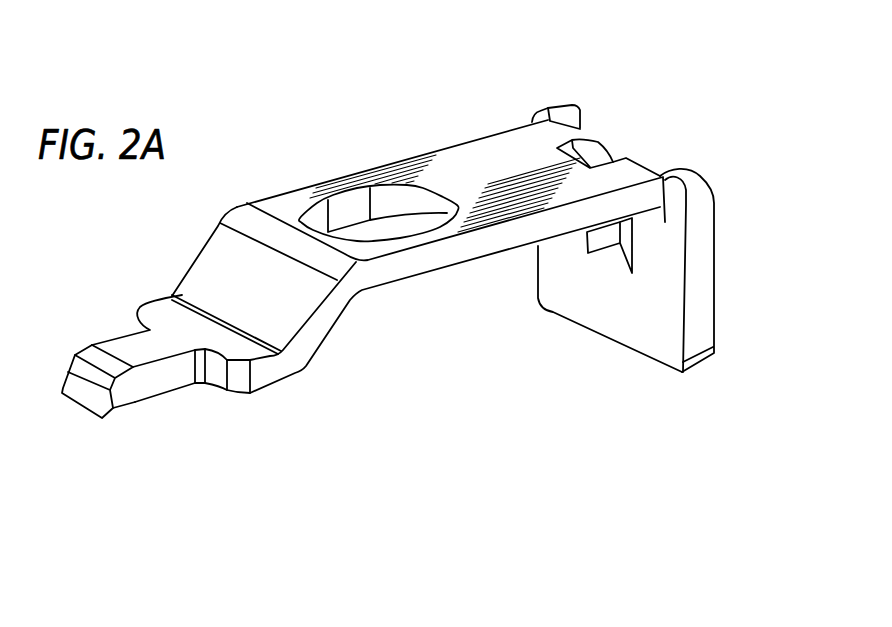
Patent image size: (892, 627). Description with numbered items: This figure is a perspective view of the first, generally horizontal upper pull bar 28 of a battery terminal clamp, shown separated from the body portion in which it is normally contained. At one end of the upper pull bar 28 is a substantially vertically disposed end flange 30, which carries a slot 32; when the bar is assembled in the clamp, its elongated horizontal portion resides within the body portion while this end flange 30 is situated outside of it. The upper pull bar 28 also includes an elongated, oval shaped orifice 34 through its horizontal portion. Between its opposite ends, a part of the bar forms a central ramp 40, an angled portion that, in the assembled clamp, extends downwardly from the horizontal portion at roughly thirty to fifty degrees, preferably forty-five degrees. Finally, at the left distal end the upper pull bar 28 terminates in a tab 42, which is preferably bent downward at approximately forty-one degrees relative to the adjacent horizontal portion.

The upper pull bar 28 is at (472, 119).
The end flange 30 is at (703, 283).
The slot 32 is at (628, 232).
The oval shaped orifice 34 is at (376, 234).
The ramp 40 is at (268, 302).
The tab 42 is at (113, 410).